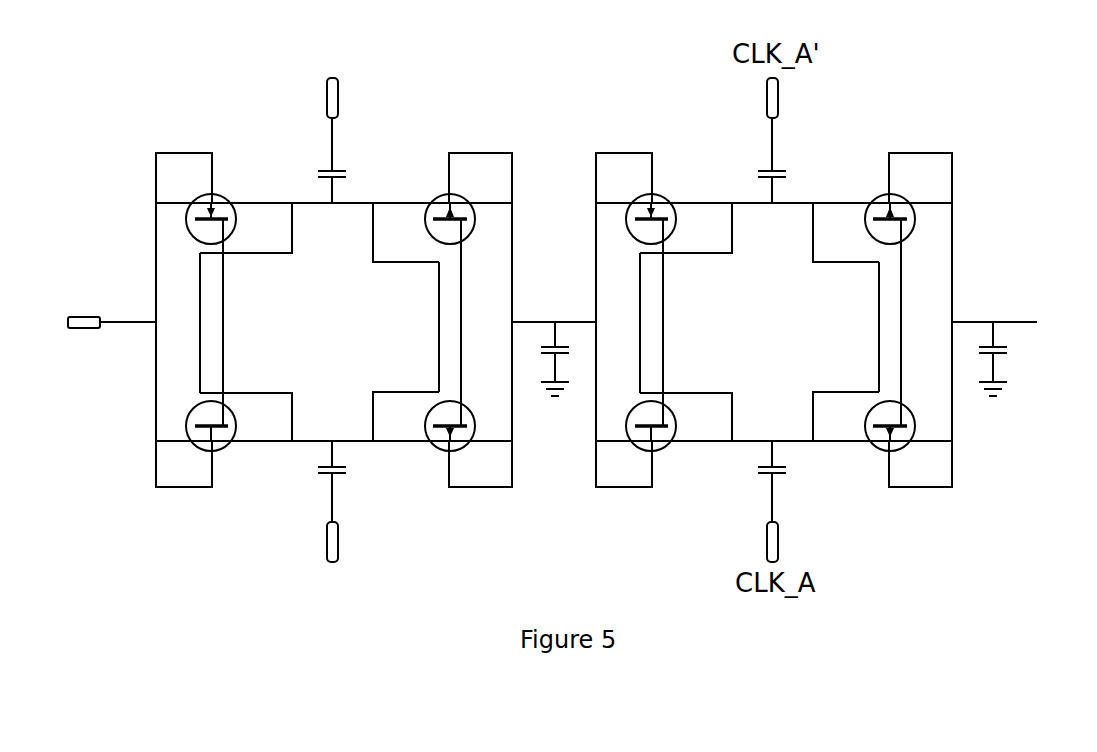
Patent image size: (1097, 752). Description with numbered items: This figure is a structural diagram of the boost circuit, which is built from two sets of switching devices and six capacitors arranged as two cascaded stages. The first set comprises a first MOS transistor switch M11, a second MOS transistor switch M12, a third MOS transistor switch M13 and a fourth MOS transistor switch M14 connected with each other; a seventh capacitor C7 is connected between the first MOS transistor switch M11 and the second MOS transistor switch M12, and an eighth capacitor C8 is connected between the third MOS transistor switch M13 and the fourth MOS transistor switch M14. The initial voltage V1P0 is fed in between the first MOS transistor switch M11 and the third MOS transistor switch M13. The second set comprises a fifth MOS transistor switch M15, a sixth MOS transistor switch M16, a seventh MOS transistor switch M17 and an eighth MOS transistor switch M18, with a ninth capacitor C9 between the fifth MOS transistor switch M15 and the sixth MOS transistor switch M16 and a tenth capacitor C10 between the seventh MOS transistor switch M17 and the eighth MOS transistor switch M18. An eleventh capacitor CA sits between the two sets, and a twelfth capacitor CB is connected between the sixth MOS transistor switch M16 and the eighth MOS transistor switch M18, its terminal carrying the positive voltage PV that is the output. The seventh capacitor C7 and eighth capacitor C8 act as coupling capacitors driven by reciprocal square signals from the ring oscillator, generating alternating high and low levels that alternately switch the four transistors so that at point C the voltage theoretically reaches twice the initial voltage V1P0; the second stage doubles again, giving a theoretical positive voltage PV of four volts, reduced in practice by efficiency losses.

The first MOS transistor switch M11 is at (236, 222).
The second MOS transistor switch M12 is at (428, 222).
The third MOS transistor switch M13 is at (236, 426).
The fourth MOS transistor switch M14 is at (427, 426).
The fifth MOS transistor switch M15 is at (676, 222).
The sixth MOS transistor switch M16 is at (868, 222).
The seventh MOS transistor switch M17 is at (676, 426).
The eighth MOS transistor switch M18 is at (867, 426).
The seventh capacitor C7 is at (348, 160).
The eighth capacitor C8 is at (349, 481).
The ninth capacitor C9 is at (788, 160).
The tenth capacitor C10 is at (795, 481).
The eleventh capacitor CA is at (554, 340).
The twelfth capacitor CB is at (994, 345).
The point C is at (525, 283).
The initial voltage V1P0 is at (108, 306).
The positive voltage PV is at (1057, 324).